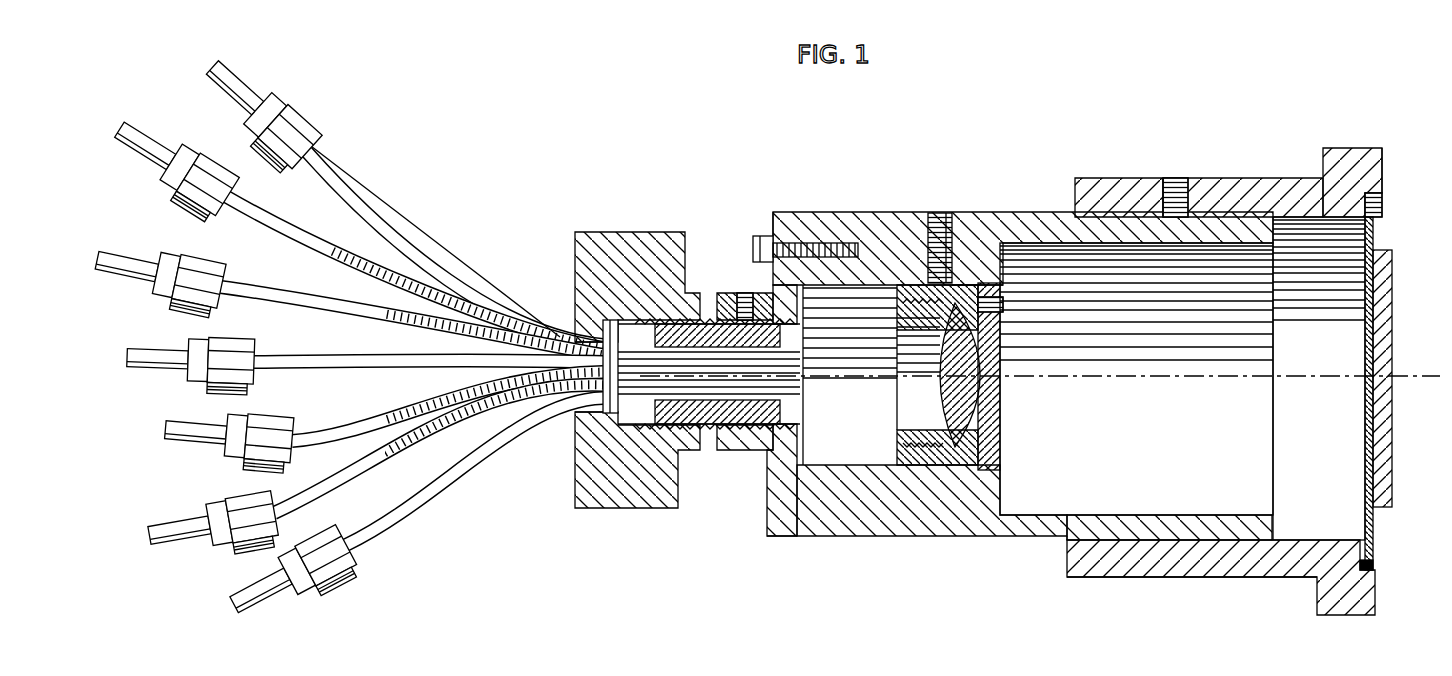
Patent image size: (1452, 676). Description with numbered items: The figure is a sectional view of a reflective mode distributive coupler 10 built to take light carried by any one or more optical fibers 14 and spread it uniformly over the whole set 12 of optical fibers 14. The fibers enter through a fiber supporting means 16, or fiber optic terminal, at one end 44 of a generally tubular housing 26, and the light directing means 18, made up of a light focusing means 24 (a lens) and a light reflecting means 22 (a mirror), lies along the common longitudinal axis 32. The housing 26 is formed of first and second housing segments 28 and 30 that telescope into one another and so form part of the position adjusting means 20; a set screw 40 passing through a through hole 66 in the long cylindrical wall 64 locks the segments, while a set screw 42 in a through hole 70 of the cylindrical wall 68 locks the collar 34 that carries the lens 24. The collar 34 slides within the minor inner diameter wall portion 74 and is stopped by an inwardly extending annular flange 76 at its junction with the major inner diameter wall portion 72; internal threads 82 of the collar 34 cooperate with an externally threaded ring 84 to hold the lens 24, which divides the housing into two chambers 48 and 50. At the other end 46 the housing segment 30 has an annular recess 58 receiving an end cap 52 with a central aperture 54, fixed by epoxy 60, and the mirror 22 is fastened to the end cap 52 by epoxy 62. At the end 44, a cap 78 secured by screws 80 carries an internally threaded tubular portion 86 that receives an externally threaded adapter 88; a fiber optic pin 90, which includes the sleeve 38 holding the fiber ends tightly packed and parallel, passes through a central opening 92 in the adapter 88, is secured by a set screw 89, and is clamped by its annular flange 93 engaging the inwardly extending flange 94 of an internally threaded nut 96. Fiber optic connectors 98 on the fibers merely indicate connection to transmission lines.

The distributive coupler 10 is at (959, 141).
The set of optical fibers 12 is at (432, 222).
The optical fibers 14 is at (300, 297).
The fiber supporting means 16 is at (705, 231).
The light directing means 18 is at (1355, 412).
The position adjusting means 20 is at (937, 475).
The light reflecting means 22 is at (1395, 312).
The light focusing means 24 is at (1003, 340).
The housing 26 is at (1092, 173).
The first housing segment 28 is at (887, 513).
The second housing segment 30 is at (1135, 560).
The common longitudinal axis 32 is at (1165, 380).
The collar 34 is at (975, 288).
The sleeve 38 is at (803, 323).
The set screw 40 is at (1173, 186).
The set screw 42 is at (948, 225).
The end of housing 44 is at (770, 232).
The other end of housing 46 is at (1383, 160).
The chamber 48 is at (770, 477).
The chamber 50 is at (1208, 503).
The end cap 52 is at (1360, 508).
The central aperture 54 is at (1357, 372).
The annular recess 58 is at (1365, 196).
The epoxy 60 is at (1382, 200).
The epoxy 62 is at (1385, 250).
The long cylindrical wall 64 is at (1222, 190).
The through hole 66 is at (1163, 200).
The cylindrical wall 68 is at (880, 212).
The through hole 70 is at (927, 240).
The major inner diameter wall portion 72 is at (1080, 532).
The minor inner diameter wall portion 74 is at (835, 480).
The annular flange 76 is at (1007, 317).
The cap 78 is at (768, 520).
The screws 80 is at (828, 242).
The internal threads 82 is at (903, 330).
The externally threaded ring 84 is at (933, 318).
The tubular portion 86 is at (735, 442).
The externally threaded adapter 88 is at (673, 402).
The set screw 89 is at (742, 297).
The fiber optic pin 90 is at (600, 335).
The central opening 92 is at (683, 353).
The annular flange 93 is at (572, 463).
The inwardly extending flange 94 is at (575, 397).
The internally threaded nut 96 is at (625, 250).
The fiber optic connectors 98 is at (197, 257).